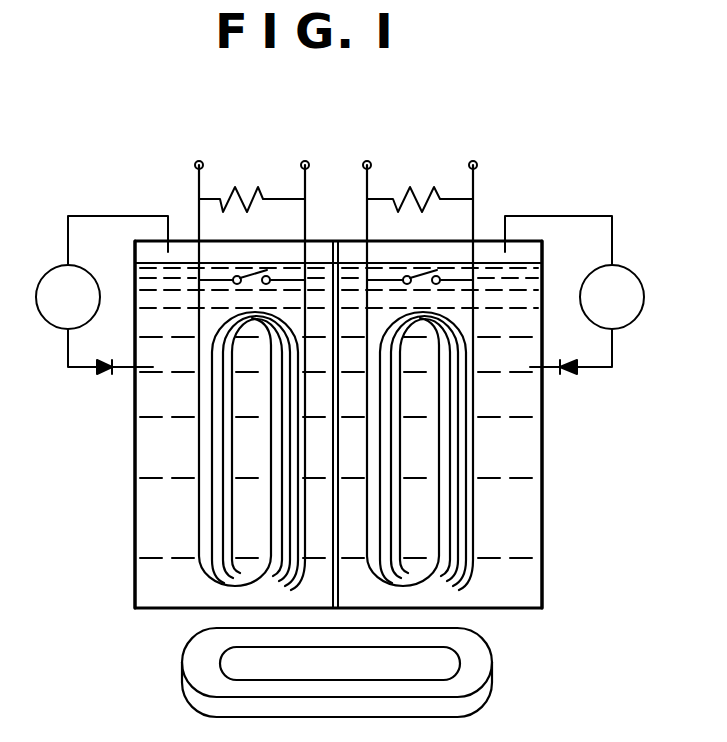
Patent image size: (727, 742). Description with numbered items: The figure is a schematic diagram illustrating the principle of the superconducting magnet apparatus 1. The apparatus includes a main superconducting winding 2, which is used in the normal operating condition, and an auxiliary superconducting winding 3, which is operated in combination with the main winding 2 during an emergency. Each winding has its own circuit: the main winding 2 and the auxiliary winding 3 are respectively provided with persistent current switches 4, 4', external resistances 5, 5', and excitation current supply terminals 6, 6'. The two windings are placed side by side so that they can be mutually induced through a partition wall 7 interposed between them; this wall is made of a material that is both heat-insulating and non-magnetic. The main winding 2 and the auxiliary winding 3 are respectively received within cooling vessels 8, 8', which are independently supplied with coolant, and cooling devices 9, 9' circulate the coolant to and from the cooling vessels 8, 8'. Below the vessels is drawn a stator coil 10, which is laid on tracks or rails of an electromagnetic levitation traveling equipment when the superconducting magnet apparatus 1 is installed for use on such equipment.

The superconducting magnet apparatus 1 is at (556, 430).
The main superconducting winding 2 is at (212, 429).
The auxiliary superconducting winding 3 is at (468, 428).
The persistent current switch 4 is at (252, 244).
The persistent current switch 4' is at (420, 244).
The external resistance 5 is at (252, 170).
The external resistance 5' is at (420, 170).
The excitation current supply terminals 6 is at (252, 125).
The excitation current supply terminals 6' is at (420, 125).
The partition wall 7 is at (338, 577).
The cooling vessel 8 is at (106, 424).
The cooling vessel 8' is at (575, 424).
The cooling device 9 is at (102, 295).
The cooling device 9' is at (574, 295).
The stator coil 10 is at (488, 663).